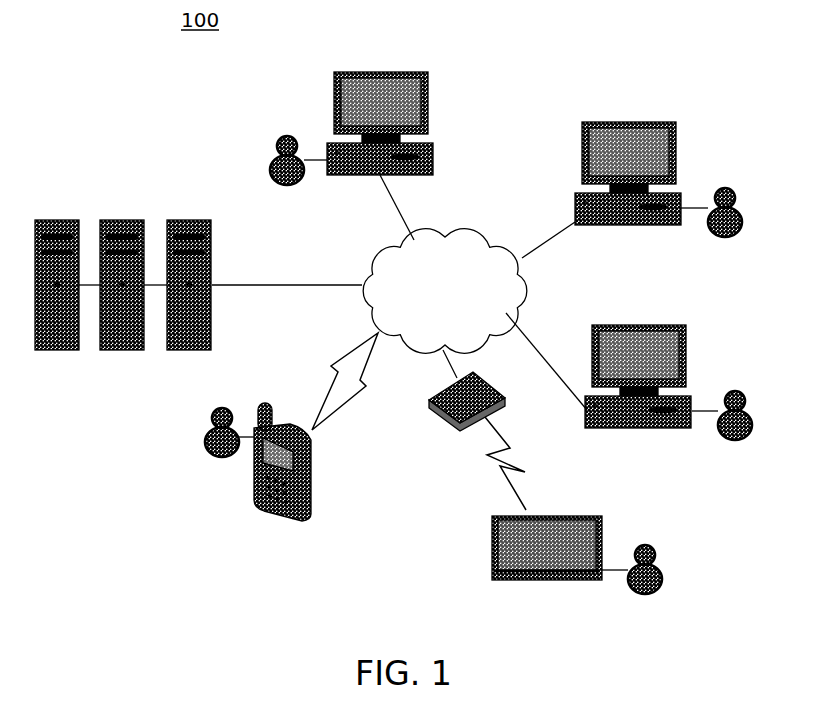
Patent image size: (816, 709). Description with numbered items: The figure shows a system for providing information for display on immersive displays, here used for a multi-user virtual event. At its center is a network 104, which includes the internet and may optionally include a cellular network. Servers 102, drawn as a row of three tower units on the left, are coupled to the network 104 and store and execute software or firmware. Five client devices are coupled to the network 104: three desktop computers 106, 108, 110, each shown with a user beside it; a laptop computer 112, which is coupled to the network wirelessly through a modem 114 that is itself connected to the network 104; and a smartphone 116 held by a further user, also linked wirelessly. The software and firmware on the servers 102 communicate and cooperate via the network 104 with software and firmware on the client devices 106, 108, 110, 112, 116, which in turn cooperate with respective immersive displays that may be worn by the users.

The servers 102 is at (120, 352).
The network 104 is at (468, 230).
The desktop computer 106 is at (428, 98).
The desktop computer 108 is at (672, 158).
The desktop computer 110 is at (686, 362).
The laptop computer 112 is at (601, 530).
The modem 114 is at (429, 405).
The smartphone 116 is at (255, 478).